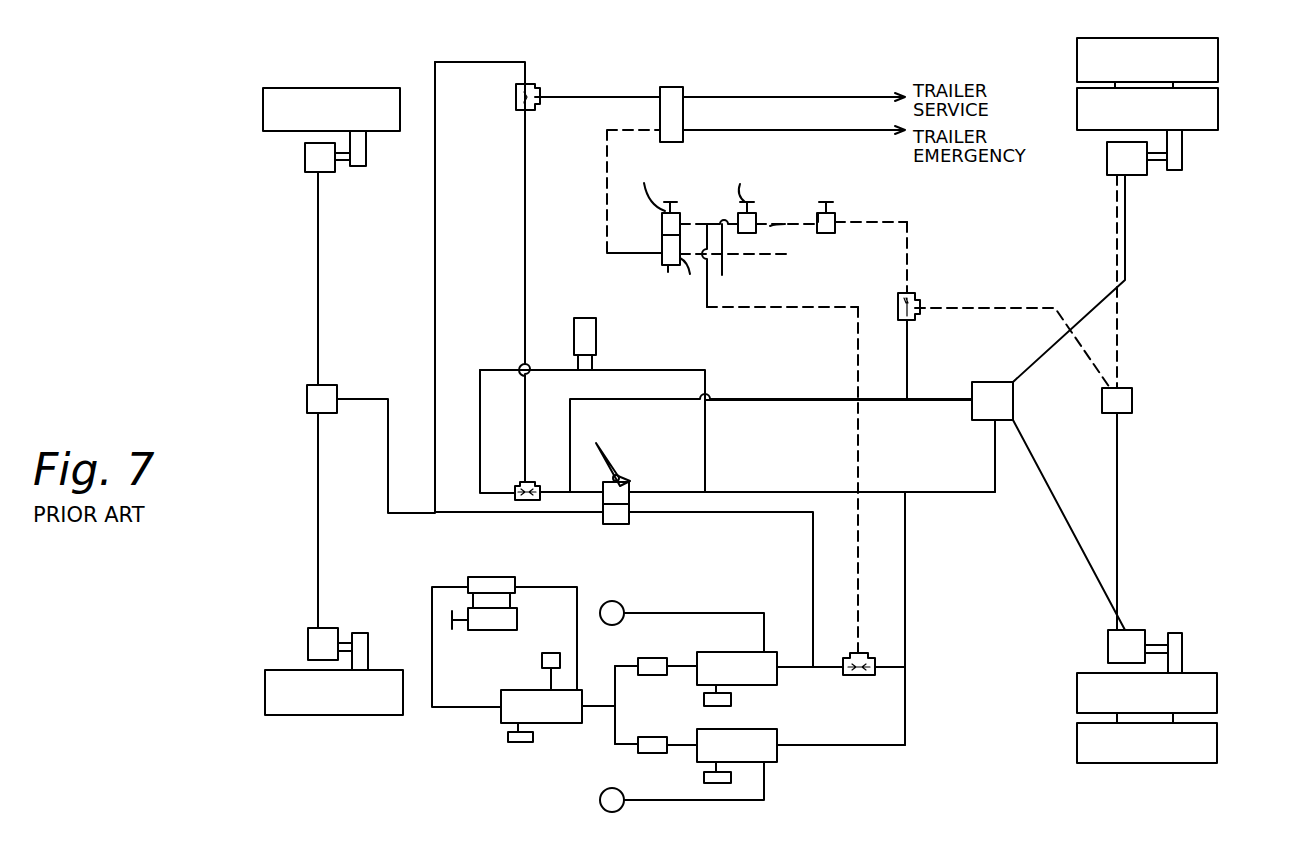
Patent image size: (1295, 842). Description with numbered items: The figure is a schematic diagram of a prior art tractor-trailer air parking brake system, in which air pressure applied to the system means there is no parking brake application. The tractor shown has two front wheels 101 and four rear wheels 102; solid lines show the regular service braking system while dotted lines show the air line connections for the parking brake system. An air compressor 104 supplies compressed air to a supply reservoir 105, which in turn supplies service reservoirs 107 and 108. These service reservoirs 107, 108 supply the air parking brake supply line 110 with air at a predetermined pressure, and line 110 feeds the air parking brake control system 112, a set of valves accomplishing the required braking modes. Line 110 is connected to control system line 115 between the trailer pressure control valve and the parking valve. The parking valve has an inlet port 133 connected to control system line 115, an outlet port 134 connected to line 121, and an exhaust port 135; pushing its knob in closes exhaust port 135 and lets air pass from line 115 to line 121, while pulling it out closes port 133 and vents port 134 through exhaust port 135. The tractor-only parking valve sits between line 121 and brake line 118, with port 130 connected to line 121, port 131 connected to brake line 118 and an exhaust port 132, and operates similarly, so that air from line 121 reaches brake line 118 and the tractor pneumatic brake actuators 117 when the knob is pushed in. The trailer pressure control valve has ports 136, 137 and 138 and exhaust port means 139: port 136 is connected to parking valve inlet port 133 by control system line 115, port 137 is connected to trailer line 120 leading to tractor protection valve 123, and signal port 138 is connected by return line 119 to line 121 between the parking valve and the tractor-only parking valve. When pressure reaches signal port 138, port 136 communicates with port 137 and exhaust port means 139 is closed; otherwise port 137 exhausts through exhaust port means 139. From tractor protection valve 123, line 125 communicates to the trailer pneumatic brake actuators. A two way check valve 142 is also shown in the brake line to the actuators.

The front wheels 101 is at (317, 88).
The rear wheels 102 is at (1218, 65).
The air compressor 104 is at (512, 577).
The supply reservoir 105 is at (567, 723).
The service reservoir 107 is at (777, 683).
The service reservoir 108 is at (777, 735).
The air parking brake supply line 110 is at (861, 622).
The air parking brake control system 112 is at (767, 163).
The control system line 115 is at (734, 260).
The tractor pneumatic brake actuators 117 is at (1107, 162).
The brake line 118 is at (940, 308).
The return line 119 is at (782, 254).
The trailer line 120 is at (607, 208).
The line 121 is at (770, 226).
The tractor protection valve 123 is at (672, 87).
The line 125 is at (800, 130).
The TOPV port 130 is at (818, 213).
The TOPV port 131 is at (835, 218).
The exhaust port 132 is at (830, 233).
The PV inlet port 133 is at (738, 213).
The outlet port 134 is at (786, 210).
The exhaust port 135 is at (746, 233).
The port 136 is at (709, 210).
The port 137 is at (662, 264).
The signal port 138 is at (696, 277).
The exhaust port means 139 is at (672, 265).
The two way check valve 142 is at (915, 318).